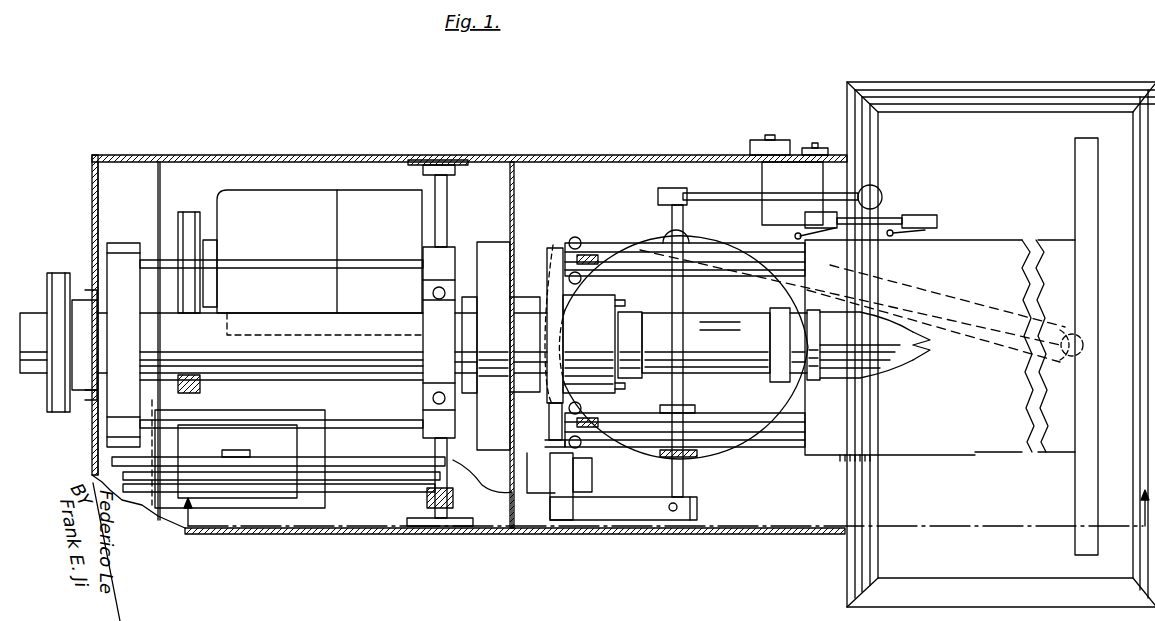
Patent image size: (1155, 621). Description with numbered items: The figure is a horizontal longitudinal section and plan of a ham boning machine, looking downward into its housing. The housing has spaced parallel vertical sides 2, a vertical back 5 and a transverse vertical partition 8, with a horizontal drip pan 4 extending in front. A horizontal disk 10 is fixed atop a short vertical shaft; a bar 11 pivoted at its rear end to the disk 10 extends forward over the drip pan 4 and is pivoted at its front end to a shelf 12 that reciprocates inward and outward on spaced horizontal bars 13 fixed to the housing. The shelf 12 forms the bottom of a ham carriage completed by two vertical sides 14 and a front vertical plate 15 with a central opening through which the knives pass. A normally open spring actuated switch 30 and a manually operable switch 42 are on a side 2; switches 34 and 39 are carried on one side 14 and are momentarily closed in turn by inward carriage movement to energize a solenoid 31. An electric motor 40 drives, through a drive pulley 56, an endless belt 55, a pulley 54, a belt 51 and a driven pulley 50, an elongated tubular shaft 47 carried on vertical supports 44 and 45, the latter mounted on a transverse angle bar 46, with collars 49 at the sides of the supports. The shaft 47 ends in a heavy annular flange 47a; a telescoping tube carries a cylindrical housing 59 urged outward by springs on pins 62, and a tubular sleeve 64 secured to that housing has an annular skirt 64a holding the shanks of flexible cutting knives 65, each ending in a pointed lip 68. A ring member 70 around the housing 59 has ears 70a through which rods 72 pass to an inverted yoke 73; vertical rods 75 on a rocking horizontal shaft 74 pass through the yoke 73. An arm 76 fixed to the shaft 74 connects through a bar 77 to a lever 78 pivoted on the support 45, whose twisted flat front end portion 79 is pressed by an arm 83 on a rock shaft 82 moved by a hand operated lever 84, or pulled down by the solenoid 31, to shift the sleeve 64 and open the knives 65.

The sides 2 is at (405, 160).
The drip pan 4 is at (905, 110).
The back 5 is at (92, 228).
The transverse vertical partition 8 is at (514, 218).
The horizontal disk 10 is at (708, 462).
The bar 11 is at (948, 312).
The shelf 12 is at (994, 453).
The horizontal bars 13 is at (607, 250).
The vertical sides 14 is at (872, 240).
The front vertical plate 15 is at (807, 400).
The spring actuated switch 30 is at (816, 143).
The solenoid 31 is at (268, 412).
The switch 34 is at (905, 222).
The switch 39 is at (806, 225).
The electric motor 40 is at (292, 200).
The manually operable switch 42 is at (770, 137).
The vertical support 44 is at (494, 272).
The vertical support 45 is at (128, 330).
The transverse angle bar 46 is at (140, 200).
The tubular shaft 47 is at (28, 318).
The annular flange 47a is at (530, 322).
The collars 49 is at (516, 312).
The driven pulley 50 is at (52, 400).
The belt 51 is at (60, 415).
The pulley 54 is at (203, 385).
The endless belt 55 is at (195, 212).
The drive pulley 56 is at (178, 228).
The cylindrical housing 59 is at (600, 388).
The pins 62 is at (630, 310).
The tubular sleeve 64 is at (750, 322).
The annular skirt 64a is at (770, 314).
The cutting knives 65 is at (843, 312).
The pointed lip 68 is at (918, 340).
The ring member 70 is at (565, 330).
The ears 70a is at (553, 250).
The rods 72 is at (285, 260).
The yoke 73 is at (423, 330).
The horizontal shaft 74 is at (437, 204).
The vertical rods 75 is at (433, 293).
The arm 76 is at (390, 482).
The bar 77 is at (348, 480).
The lever 78 is at (338, 465).
The front end portion 79 is at (548, 527).
The rock shaft 82 is at (690, 300).
The arm 83 is at (567, 505).
The hand operated lever 84 is at (766, 205).